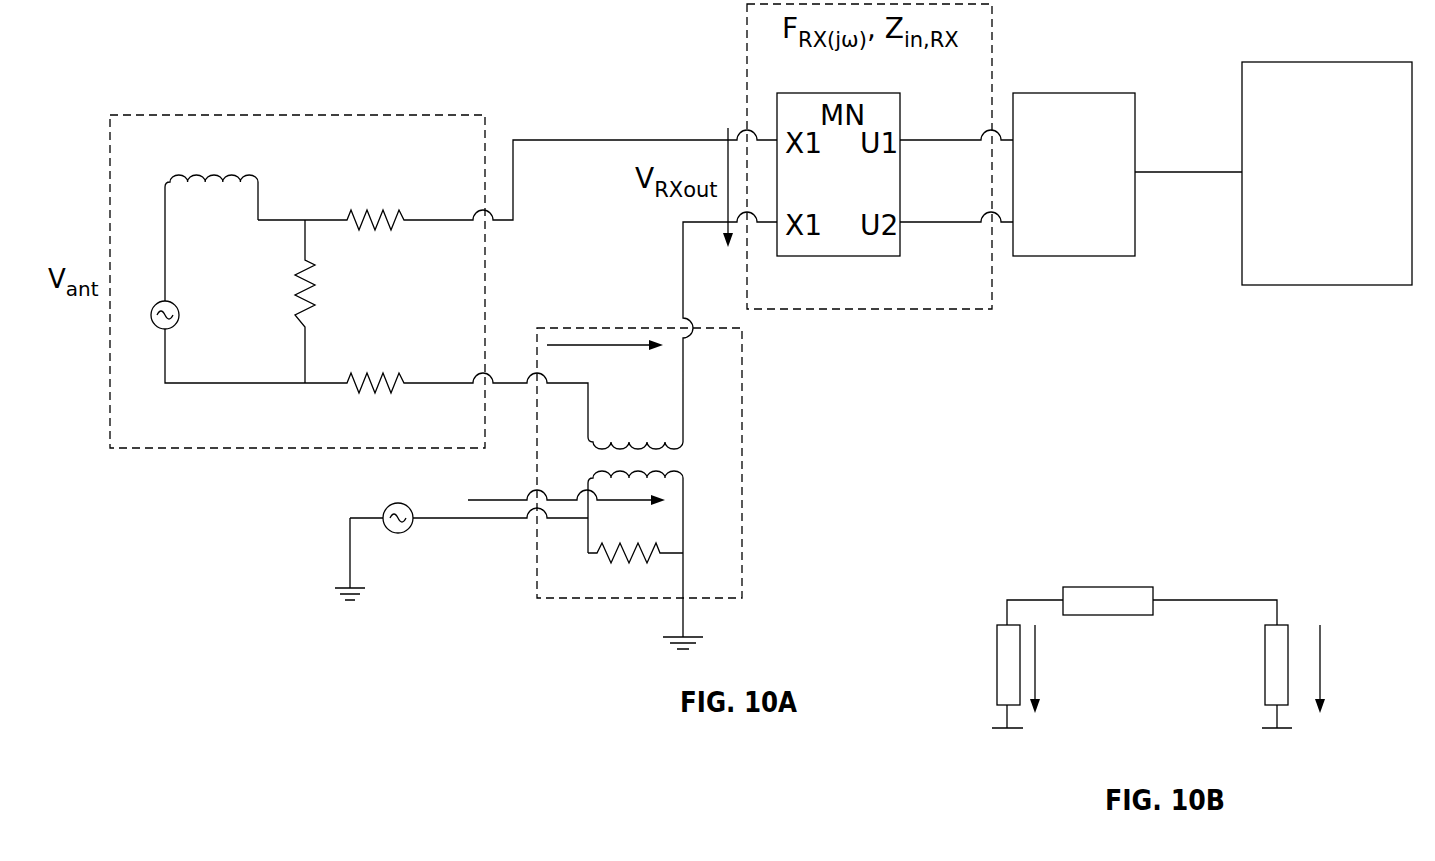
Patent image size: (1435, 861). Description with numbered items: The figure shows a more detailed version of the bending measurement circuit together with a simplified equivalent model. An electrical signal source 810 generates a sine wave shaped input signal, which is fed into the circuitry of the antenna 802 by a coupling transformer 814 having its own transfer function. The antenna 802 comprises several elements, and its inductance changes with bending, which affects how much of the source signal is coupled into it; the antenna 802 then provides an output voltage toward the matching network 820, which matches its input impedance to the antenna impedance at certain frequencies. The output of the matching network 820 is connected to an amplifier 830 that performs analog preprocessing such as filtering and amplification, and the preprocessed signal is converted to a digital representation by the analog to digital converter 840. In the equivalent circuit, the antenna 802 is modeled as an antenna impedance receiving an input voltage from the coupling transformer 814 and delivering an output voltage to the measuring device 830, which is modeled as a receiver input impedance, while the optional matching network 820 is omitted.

In FIG. 10A, the antenna 802 is at (178, 113).
In FIG. 10B, the antenna 802 is at (1072, 585).
In FIG. 10A, the electrical signal source 810 is at (405, 535).
In FIG. 10A, the coupling transformer 814 is at (745, 512).
In FIG. 10B, the coupling transformer 814 is at (996, 665).
In FIG. 10B, the matching network 820 is at (1278, 624).
In FIG. 10A, the amplifier 830 is at (1082, 93).
In FIG. 10A, the analog to digital converter 840 is at (1240, 86).